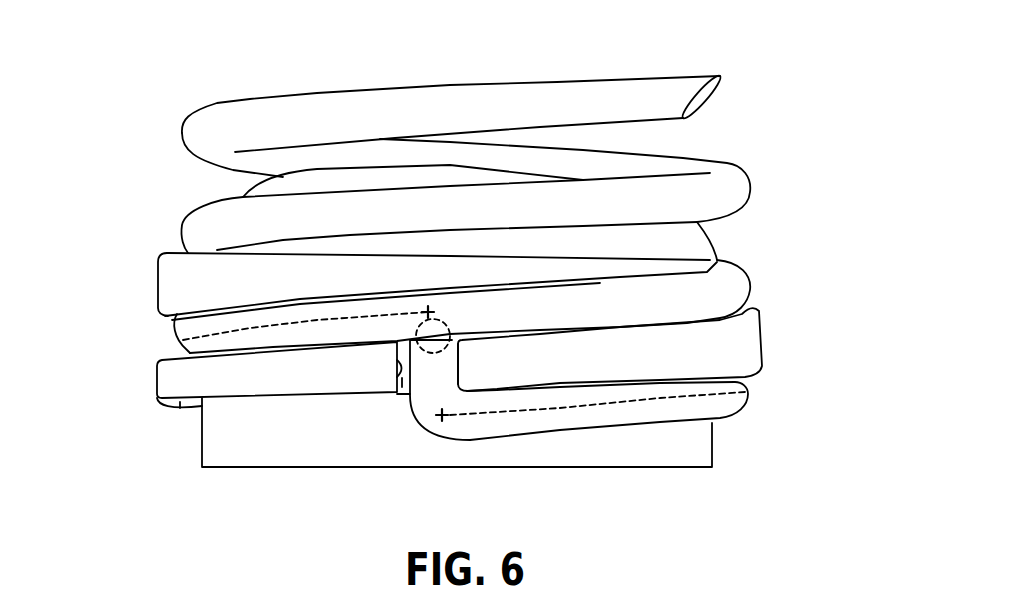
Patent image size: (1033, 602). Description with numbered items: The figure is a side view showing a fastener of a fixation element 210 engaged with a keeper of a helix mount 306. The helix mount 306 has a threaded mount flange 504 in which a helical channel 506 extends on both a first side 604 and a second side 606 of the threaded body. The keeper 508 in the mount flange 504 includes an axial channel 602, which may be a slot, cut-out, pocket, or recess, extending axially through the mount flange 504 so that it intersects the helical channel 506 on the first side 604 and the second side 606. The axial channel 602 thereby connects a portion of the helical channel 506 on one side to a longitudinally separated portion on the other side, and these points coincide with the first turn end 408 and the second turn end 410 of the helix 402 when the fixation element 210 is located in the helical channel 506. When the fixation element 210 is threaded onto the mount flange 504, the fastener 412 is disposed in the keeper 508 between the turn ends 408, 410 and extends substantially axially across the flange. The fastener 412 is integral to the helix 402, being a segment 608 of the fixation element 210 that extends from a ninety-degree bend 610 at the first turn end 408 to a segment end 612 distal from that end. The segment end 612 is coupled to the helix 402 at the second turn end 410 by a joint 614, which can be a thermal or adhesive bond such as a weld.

The fixation element 210 is at (550, 98).
The helix mount 306 is at (278, 190).
The helix 402 is at (725, 407).
The first turn end 408 is at (501, 440).
The second turn end 410 is at (427, 310).
The fastener 412 is at (648, 411).
The mount flange 504 is at (742, 348).
The helical channel 506 is at (170, 330).
The keeper 508 is at (397, 355).
The axial channel 602 is at (400, 392).
The first side 604 is at (167, 357).
The second side 606 is at (180, 402).
The segment 608 is at (597, 403).
The bend 610 is at (440, 425).
The segment end 612 is at (452, 334).
The joint 614 is at (442, 325).